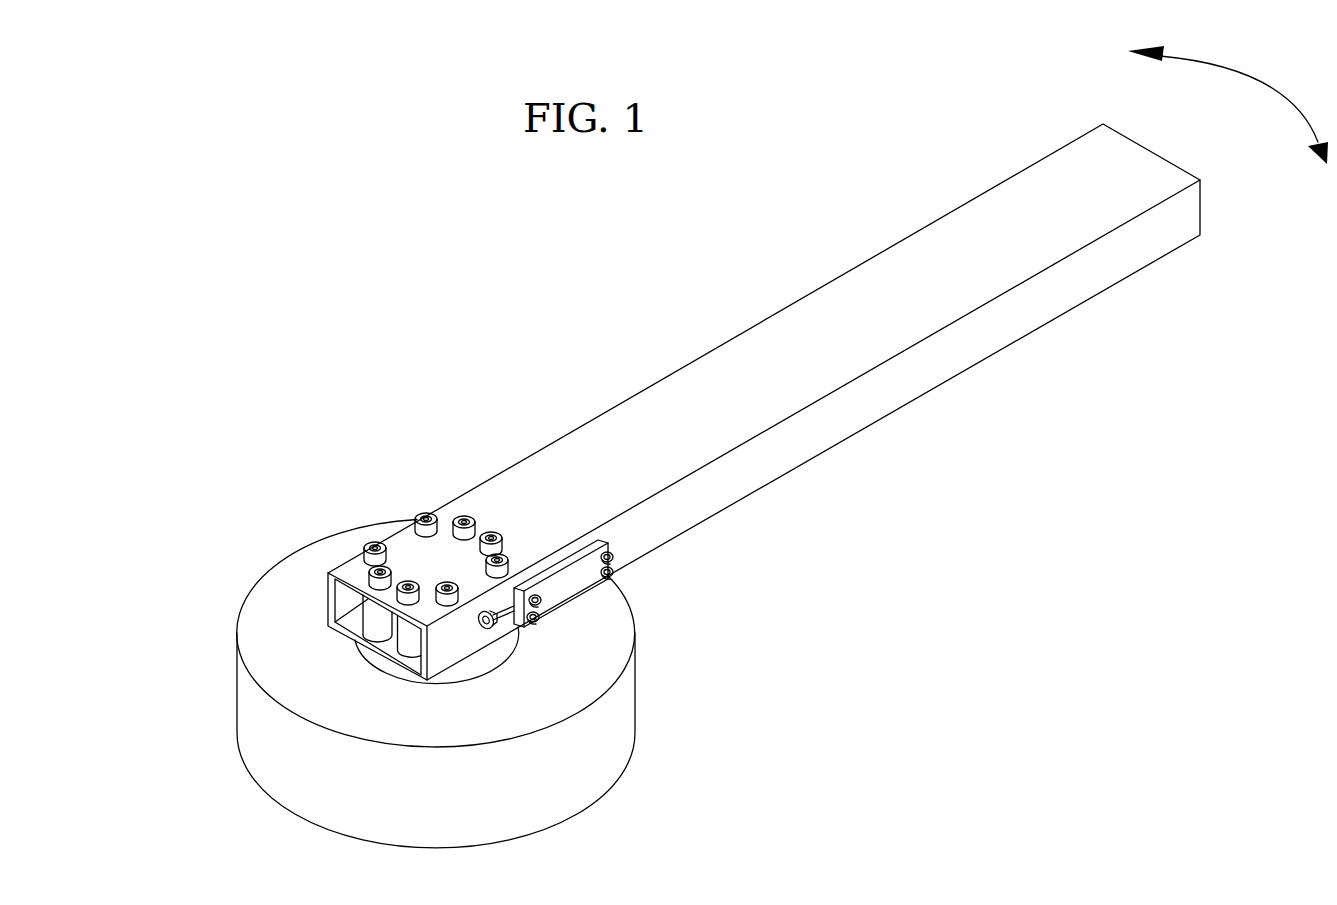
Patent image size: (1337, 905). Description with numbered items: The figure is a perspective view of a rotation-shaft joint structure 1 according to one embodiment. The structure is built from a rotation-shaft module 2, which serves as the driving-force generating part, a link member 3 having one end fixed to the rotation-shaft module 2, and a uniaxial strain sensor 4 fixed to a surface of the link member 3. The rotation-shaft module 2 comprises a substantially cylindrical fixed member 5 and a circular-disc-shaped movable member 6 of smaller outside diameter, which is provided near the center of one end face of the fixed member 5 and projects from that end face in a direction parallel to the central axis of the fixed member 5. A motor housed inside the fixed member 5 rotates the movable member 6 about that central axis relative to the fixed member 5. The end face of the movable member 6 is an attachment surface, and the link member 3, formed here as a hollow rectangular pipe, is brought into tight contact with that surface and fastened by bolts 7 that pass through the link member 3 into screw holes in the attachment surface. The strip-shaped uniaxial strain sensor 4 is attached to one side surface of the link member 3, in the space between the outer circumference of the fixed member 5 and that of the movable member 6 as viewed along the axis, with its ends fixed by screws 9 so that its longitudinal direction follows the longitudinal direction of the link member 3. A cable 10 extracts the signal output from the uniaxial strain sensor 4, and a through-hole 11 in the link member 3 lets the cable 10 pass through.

The rotation-shaft joint structure 1 is at (426, 386).
The rotation-shaft module 2 is at (226, 634).
The link member 3 is at (620, 422).
The uniaxial strain sensor 4 is at (580, 583).
The fixed member 5 is at (623, 722).
The movable member 6 is at (493, 660).
The bolts 7 is at (374, 540).
The screws 9 is at (614, 558).
The cable 10 is at (519, 628).
The through-hole 11 is at (486, 628).